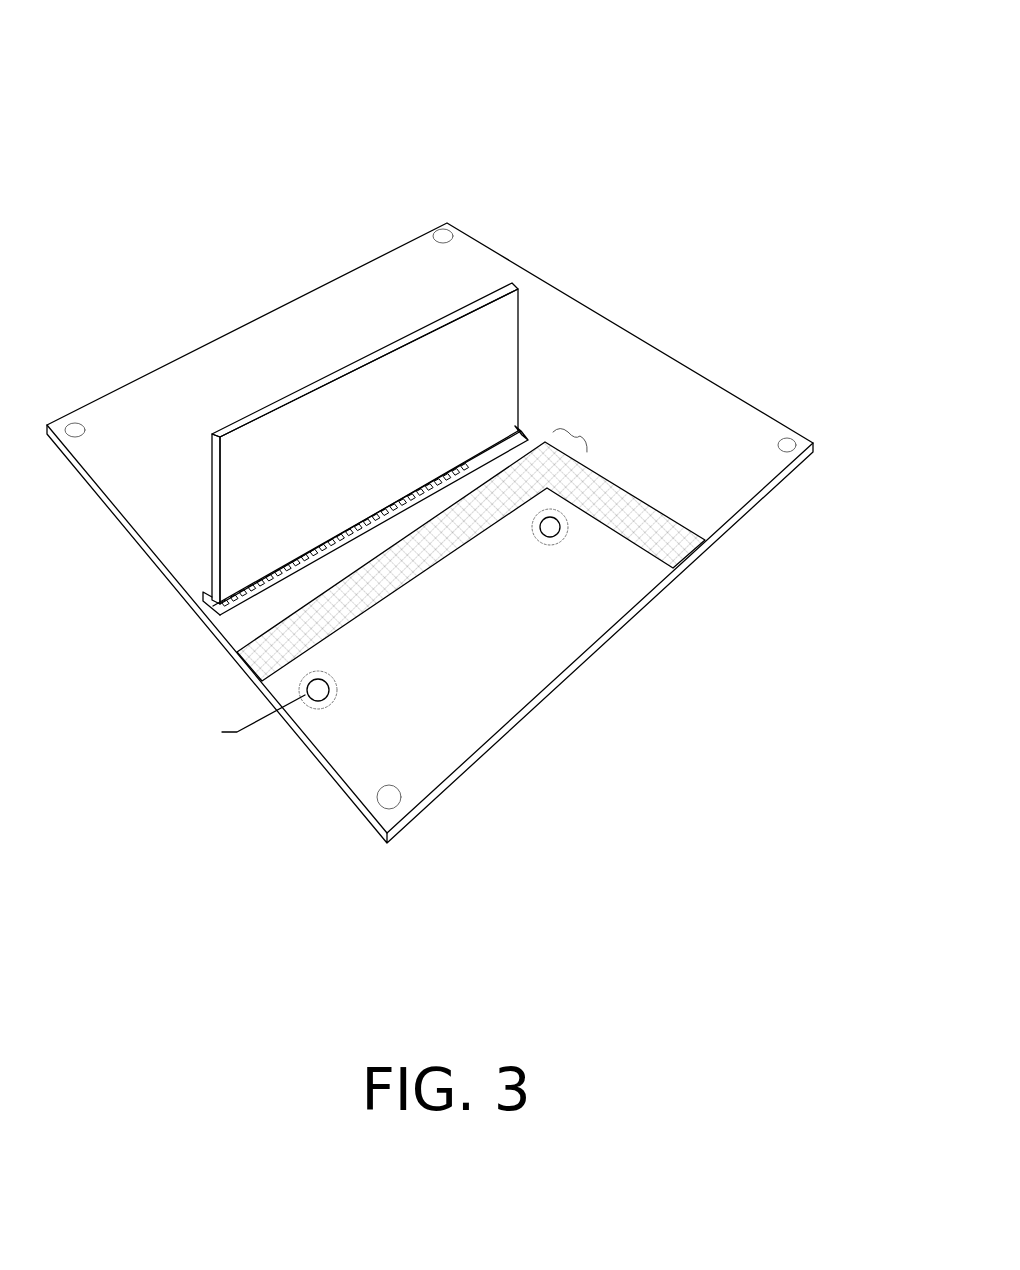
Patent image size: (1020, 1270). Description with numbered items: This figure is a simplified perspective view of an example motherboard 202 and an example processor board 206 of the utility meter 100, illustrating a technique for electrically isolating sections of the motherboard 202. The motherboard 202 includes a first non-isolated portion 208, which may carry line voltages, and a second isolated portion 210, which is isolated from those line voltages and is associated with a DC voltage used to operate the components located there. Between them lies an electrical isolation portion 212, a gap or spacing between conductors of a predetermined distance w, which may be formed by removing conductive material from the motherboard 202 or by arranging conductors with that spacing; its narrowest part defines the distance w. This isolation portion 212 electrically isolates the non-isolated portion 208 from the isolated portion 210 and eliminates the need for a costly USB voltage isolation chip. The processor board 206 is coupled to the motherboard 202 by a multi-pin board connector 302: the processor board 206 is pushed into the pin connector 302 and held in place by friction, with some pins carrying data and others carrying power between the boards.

The utility meter 100 is at (648, 40).
The motherboard 202 is at (490, 250).
The processor board 206 is at (262, 427).
The non-isolated portion 208 is at (363, 767).
The isolated portion 210 is at (643, 355).
The electrical isolation portion 212 is at (678, 550).
The pin connector 302 is at (222, 612).